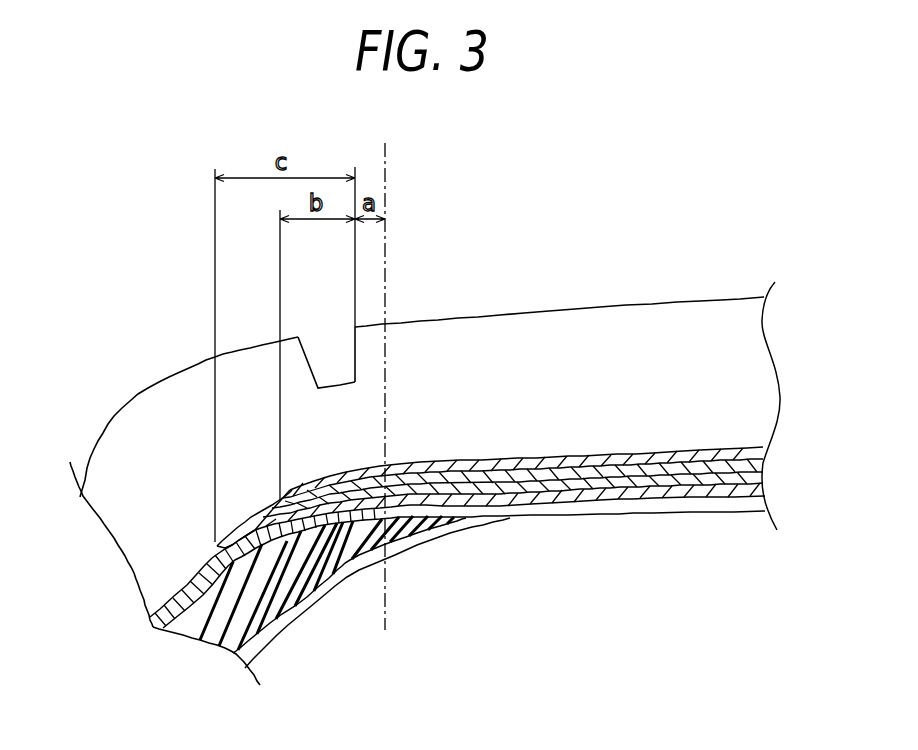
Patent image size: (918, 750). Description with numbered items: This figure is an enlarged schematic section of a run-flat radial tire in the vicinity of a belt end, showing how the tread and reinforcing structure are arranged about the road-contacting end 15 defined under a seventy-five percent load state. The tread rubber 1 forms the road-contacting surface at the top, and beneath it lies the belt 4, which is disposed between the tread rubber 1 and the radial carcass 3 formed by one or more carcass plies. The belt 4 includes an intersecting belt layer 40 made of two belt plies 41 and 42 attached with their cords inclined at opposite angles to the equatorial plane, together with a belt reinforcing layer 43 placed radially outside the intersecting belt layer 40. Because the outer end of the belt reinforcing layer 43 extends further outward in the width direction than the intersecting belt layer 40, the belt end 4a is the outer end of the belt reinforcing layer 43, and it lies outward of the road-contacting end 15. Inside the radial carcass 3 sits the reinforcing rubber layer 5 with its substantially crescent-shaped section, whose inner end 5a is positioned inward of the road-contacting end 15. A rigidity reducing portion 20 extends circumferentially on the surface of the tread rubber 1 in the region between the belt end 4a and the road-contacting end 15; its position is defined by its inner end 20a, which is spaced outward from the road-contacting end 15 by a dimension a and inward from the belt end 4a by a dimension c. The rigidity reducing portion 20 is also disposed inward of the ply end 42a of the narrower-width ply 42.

The tread rubber 1 is at (647, 318).
The radial carcass 3 is at (183, 588).
The belt 4 is at (632, 442).
The belt end 4a is at (215, 548).
The reinforcing rubber layer 5 is at (273, 598).
The inner end of the reinforcing rubber layer 5a is at (466, 520).
The road-contacting end 15 is at (386, 178).
The rigidity reducing portion 20 is at (340, 383).
The inner end of the rigidity reducing portion 20a is at (355, 325).
The intersecting belt layer 40 is at (565, 372).
The belt ply 41 is at (532, 486).
The narrower-width ply 42 is at (452, 471).
The ply end 42a is at (245, 514).
The belt reinforcing layer 43 is at (258, 506).